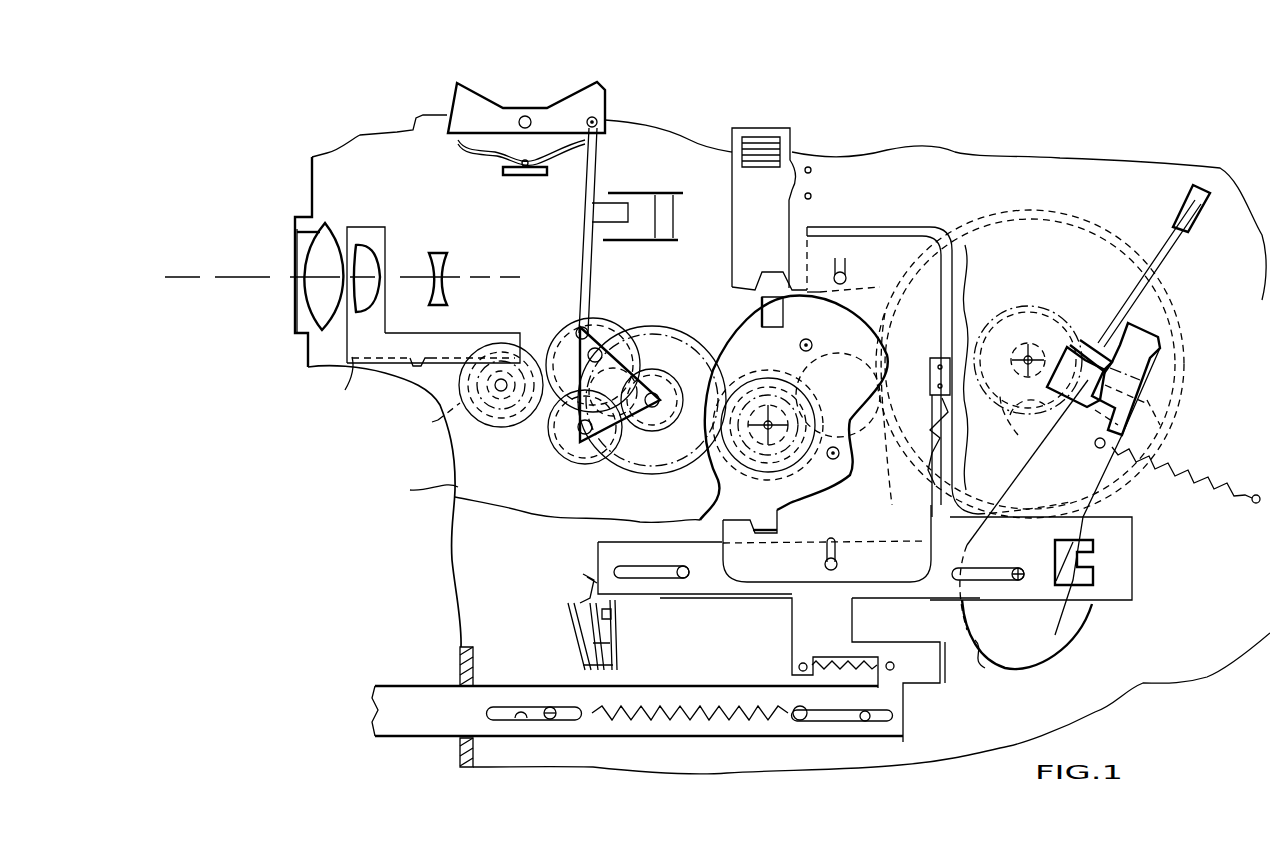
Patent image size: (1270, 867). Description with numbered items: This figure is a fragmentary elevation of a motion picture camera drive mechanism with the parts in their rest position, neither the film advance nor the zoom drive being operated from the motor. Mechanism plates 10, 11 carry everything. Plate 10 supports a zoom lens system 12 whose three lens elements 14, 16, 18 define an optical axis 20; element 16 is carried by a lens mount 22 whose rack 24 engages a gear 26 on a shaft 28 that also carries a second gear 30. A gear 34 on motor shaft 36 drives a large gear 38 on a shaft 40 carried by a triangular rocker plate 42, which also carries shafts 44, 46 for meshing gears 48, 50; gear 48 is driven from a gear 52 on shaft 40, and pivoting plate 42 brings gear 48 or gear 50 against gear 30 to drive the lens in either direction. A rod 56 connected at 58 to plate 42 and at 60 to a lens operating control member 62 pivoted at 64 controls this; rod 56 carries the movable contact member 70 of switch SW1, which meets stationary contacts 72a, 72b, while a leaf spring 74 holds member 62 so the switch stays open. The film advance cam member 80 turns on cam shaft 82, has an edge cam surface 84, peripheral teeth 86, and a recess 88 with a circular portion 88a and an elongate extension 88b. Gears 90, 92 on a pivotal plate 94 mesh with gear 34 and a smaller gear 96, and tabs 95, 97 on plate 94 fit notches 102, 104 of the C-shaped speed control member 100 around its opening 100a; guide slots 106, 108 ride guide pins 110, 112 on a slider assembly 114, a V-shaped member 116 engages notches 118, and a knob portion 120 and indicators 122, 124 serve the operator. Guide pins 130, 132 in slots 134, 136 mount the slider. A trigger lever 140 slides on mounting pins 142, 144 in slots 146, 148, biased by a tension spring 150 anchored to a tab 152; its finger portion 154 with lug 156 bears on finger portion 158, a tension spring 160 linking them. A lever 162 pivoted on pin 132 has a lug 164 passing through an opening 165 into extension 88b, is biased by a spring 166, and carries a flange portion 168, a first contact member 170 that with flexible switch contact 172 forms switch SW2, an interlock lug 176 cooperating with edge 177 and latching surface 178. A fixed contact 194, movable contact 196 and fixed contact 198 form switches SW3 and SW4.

The mechanism plate 10 is at (420, 489).
The mechanism plate 11 is at (700, 255).
The zoom lens system 12 is at (298, 352).
The lens element 14 is at (332, 245).
The lens element 16 is at (372, 250).
The lens element 18 is at (443, 252).
The optical axis 20 is at (232, 275).
The lens mount 22 is at (339, 379).
The rack 24 is at (392, 360).
The gear 26 is at (434, 416).
The shaft 28 is at (503, 392).
The second gear 30 is at (518, 425).
The gear 34 is at (750, 455).
The motor shaft 36 is at (767, 430).
The large gear 38 is at (648, 465).
The shaft 40 is at (653, 408).
The rocker plate 42 is at (612, 422).
The shaft 44 is at (598, 366).
The shaft 46 is at (585, 435).
The gear 48 is at (605, 312).
The gear 50 is at (572, 450).
The gear 52 is at (665, 380).
The rod 56 is at (580, 257).
The pivotal connection 58 is at (575, 330).
The connection 60 is at (598, 118).
The lens operating control member 62 is at (580, 120).
The pivot 64 is at (527, 115).
The movable contact member 70 is at (610, 210).
The stationary contact 72a is at (625, 192).
The stationary contact 72b is at (622, 243).
The leaf spring 74 is at (478, 153).
The cam member 80 is at (1050, 210).
The cam shaft 82 is at (1040, 354).
The edge cam surface 84 is at (1043, 300).
The teeth 86 is at (892, 330).
The recess 88 is at (1035, 440).
The circular portion 88a is at (1015, 422).
The elongate extension 88b is at (1060, 455).
The gear 90 is at (794, 350).
The gear 92 is at (800, 500).
The plate 94 is at (772, 348).
The tab 95 is at (766, 538).
The smaller gear 96 is at (808, 380).
The tab 97 is at (760, 310).
The speed control member 100 is at (792, 238).
The semi-circular opening 100a is at (822, 508).
The notch 102 is at (788, 533).
The notch 104 is at (777, 270).
The guide slot 106 is at (845, 552).
The guide slot 108 is at (845, 265).
The guide pin 110 is at (840, 570).
The guide pin 112 is at (847, 278).
The slider assembly 114 is at (760, 605).
The V-shaped member 116 is at (930, 478).
The notches 118 is at (928, 375).
The knob portion 120 is at (772, 142).
The indicator 122 is at (793, 165).
The indicator 124 is at (812, 195).
The guide pin 130 is at (640, 570).
The guide pin 132 is at (1012, 568).
The guide slot 134 is at (620, 572).
The guide slot 136 is at (988, 568).
The trigger lever 140 is at (425, 740).
The mounting pin 142 is at (553, 720).
The mounting pin 144 is at (880, 722).
The slot 146 is at (522, 722).
The slot 148 is at (843, 722).
The tension spring 150 is at (640, 720).
The tab 152 is at (800, 722).
The finger portion 154 is at (912, 660).
The lug 156 is at (855, 655).
The finger portion 158 is at (800, 640).
The tension spring 160 is at (830, 668).
The lever 162 is at (1120, 498).
The lug 164 is at (1158, 410).
The opening 165 is at (1100, 345).
The spring 166 is at (1185, 465).
The flange portion 168 is at (983, 660).
The first contact member 170 is at (1160, 343).
The flexible switch contact 172 is at (1165, 245).
The interlock lug 176 is at (1085, 556).
The edge 177 is at (1100, 568).
The latching surface 178 is at (1110, 582).
The fixed contact 194 is at (620, 622).
The movable contact 196 is at (580, 588).
The fixed contact 198 is at (572, 630).
The switch SW1 is at (614, 186).
The switch SW2 is at (1138, 318).
The switch SW3 is at (620, 640).
The switch SW4 is at (570, 620).